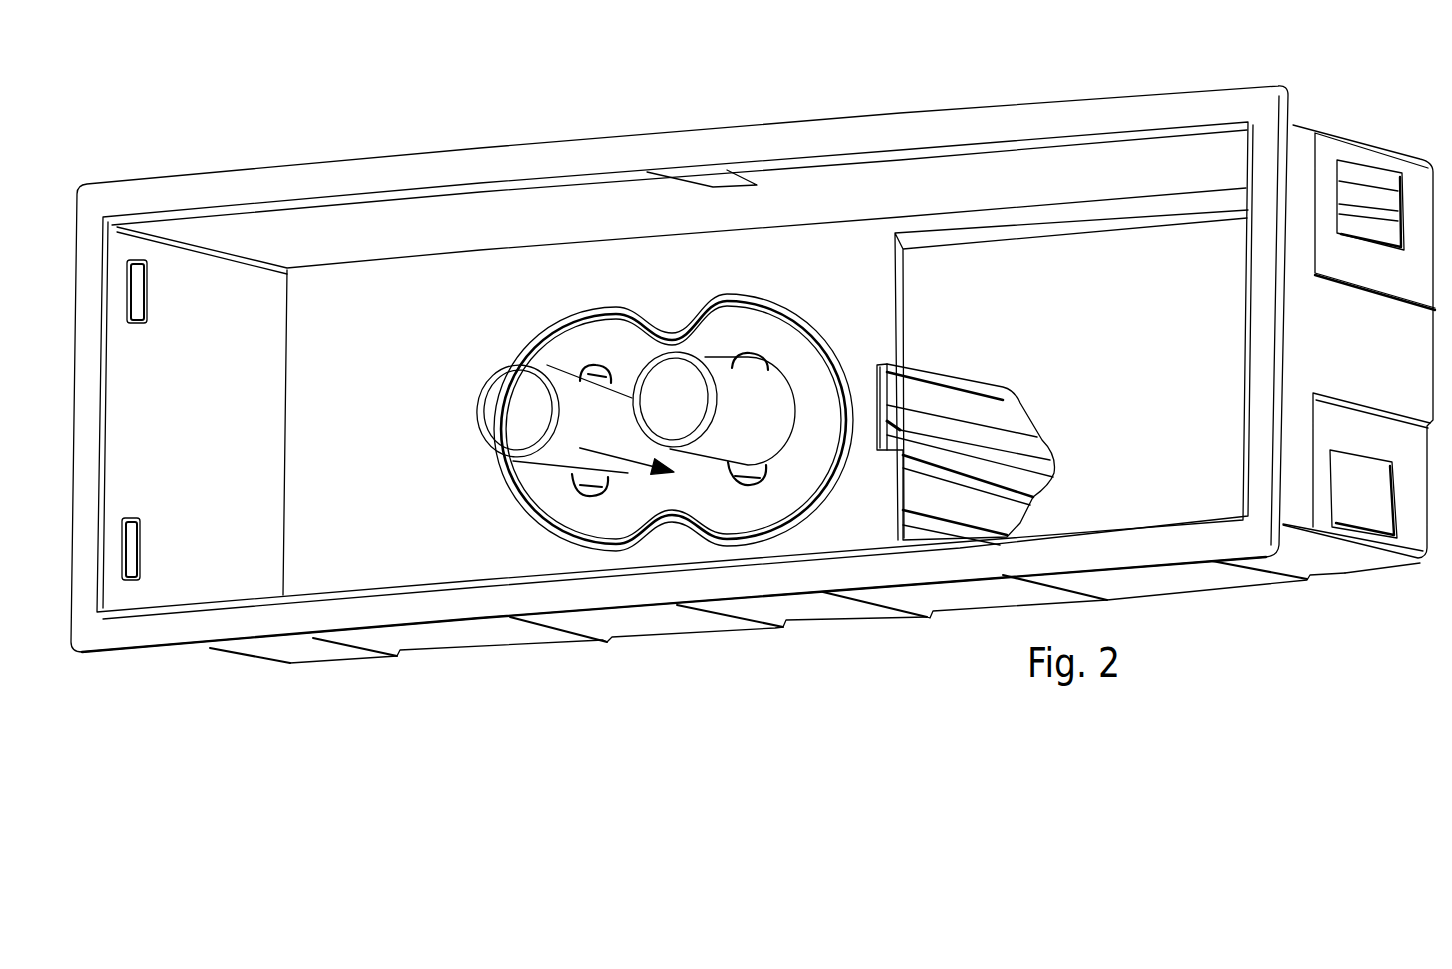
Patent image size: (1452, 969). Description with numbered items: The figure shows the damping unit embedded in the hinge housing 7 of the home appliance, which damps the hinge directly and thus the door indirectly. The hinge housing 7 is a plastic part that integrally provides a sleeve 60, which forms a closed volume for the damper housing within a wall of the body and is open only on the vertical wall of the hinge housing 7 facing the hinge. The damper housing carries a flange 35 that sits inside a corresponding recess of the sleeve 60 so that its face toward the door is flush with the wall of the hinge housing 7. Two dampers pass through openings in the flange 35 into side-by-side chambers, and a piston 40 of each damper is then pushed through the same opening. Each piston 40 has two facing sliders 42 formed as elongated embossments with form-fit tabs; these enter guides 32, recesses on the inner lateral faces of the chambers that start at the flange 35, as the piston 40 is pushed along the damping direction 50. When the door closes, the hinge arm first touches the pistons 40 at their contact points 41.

The hinge housing 7 is at (190, 191).
The guide 32 is at (586, 362).
The flange 35 is at (523, 477).
The piston 40 is at (490, 410).
The contact point 41 is at (497, 365).
The slider 42 is at (767, 366).
The damping direction 50 is at (620, 443).
The sleeve 60 is at (1000, 421).